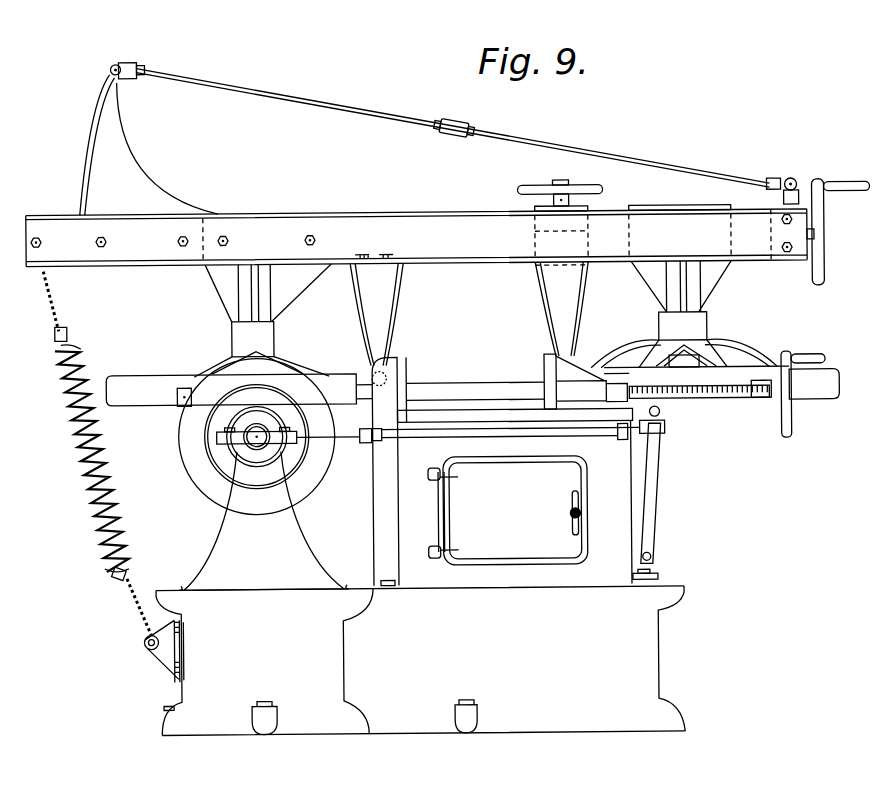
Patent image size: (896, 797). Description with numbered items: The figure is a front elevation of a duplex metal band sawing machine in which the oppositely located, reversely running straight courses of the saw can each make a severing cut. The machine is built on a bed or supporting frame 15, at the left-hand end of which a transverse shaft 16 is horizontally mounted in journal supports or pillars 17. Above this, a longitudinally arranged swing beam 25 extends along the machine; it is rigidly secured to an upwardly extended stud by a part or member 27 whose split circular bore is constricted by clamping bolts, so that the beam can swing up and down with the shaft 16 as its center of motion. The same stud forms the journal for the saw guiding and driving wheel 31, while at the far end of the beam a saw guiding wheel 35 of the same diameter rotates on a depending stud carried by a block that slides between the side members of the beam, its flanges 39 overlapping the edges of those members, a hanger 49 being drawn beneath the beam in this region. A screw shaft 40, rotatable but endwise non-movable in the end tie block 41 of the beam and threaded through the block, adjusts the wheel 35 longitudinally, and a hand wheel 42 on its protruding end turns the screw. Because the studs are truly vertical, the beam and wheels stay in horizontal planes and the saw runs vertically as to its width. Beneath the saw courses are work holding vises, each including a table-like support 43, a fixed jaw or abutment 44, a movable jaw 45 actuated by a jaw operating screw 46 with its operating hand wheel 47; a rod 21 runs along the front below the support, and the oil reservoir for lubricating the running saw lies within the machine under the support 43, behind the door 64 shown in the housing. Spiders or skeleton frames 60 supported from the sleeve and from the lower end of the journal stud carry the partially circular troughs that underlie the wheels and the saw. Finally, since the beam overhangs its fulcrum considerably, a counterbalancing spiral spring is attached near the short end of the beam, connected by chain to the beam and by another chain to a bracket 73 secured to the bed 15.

The bed or supporting frame 15 is at (420, 657).
The transverse shaft 16 is at (257, 441).
The journal supports or pillars 17 is at (263, 520).
The rod 21 is at (573, 432).
The swing beam 25 is at (515, 250).
The part or member 27 is at (246, 298).
The saw guiding and driving wheel 31 is at (212, 368).
The saw guiding wheel 35 is at (763, 338).
The flanges 39 is at (688, 208).
The screw shaft 40 is at (826, 237).
The end tie block 41 is at (778, 206).
The hand wheel 42 is at (826, 262).
The table-like support 43 is at (489, 410).
The fixed jaw or abutment 44 is at (403, 373).
The movable jaw 45 is at (546, 367).
The jaw operating screw 46 is at (683, 402).
The operating hand wheel 47 is at (790, 436).
The hanger 49 is at (570, 310).
The spiders or skeleton frames 60 is at (178, 397).
The door 64 is at (518, 502).
The bracket 73 is at (166, 655).